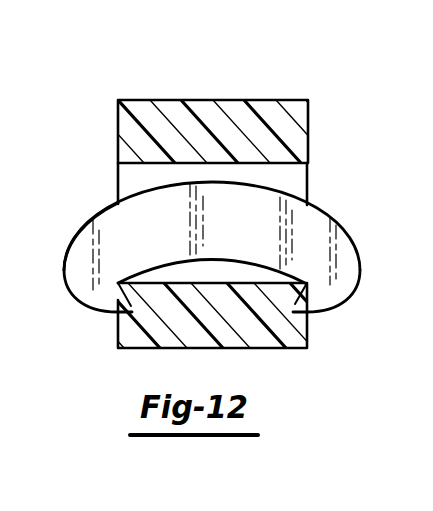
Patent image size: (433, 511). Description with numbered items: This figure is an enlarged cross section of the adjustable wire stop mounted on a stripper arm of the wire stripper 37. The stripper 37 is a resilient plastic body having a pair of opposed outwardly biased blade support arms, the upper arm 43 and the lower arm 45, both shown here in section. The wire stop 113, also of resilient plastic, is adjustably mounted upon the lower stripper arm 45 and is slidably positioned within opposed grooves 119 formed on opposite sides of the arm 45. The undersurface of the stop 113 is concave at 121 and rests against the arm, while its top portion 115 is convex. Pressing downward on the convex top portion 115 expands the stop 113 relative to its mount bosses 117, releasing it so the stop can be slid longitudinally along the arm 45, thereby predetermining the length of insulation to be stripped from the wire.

The wire stripper 37 is at (116, 179).
The blade support upper arm 43 is at (200, 113).
The blade support lower arm 45 is at (229, 328).
The wire stop 113 is at (329, 211).
The convex top portion 115 is at (99, 216).
The mount bosses 117 is at (131, 308).
The grooves 119 is at (299, 300).
The concave undersurface 121 is at (238, 264).